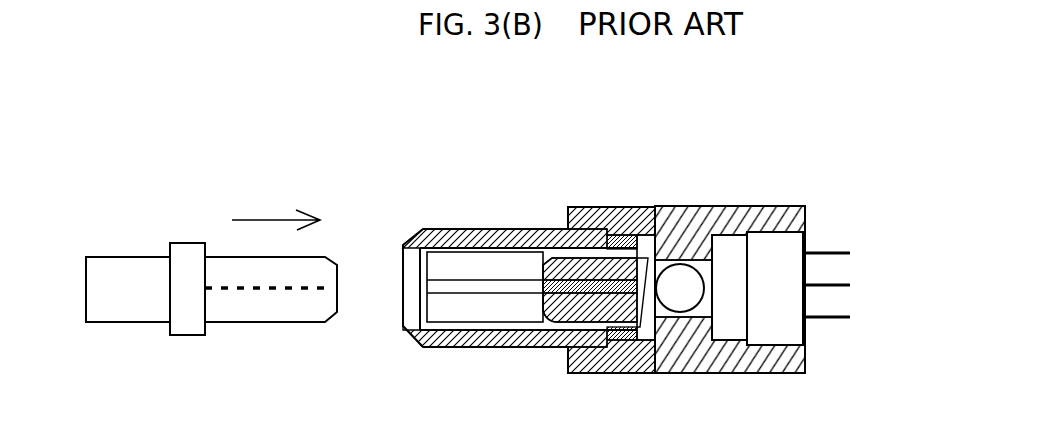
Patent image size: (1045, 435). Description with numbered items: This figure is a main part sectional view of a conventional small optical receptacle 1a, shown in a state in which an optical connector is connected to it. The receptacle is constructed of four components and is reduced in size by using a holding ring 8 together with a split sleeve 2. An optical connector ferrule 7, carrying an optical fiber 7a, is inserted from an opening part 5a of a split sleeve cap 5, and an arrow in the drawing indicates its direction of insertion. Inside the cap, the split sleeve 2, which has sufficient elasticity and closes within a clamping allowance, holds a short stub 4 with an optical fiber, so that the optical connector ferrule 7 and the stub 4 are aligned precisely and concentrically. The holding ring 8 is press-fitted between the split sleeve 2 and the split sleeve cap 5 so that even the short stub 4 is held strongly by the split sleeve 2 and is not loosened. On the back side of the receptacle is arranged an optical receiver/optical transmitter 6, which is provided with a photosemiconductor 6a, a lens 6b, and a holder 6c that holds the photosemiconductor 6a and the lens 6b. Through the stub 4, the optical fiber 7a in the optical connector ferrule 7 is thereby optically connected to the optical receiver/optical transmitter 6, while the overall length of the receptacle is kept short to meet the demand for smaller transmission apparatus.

The small optical receptacle 1a is at (520, 203).
The split sleeve 2 is at (460, 257).
The stub with an optical fiber 4 is at (542, 313).
The split sleeve cap 5 is at (590, 206).
The opening part 5a is at (402, 268).
The optical receiver/optical transmitter 6 is at (722, 204).
The photosemiconductor 6a is at (782, 255).
The lens 6b is at (673, 283).
The holder 6c is at (685, 366).
The optical connector ferrule 7 is at (225, 257).
The optical fiber 7a is at (272, 293).
The holding ring 8 is at (633, 247).